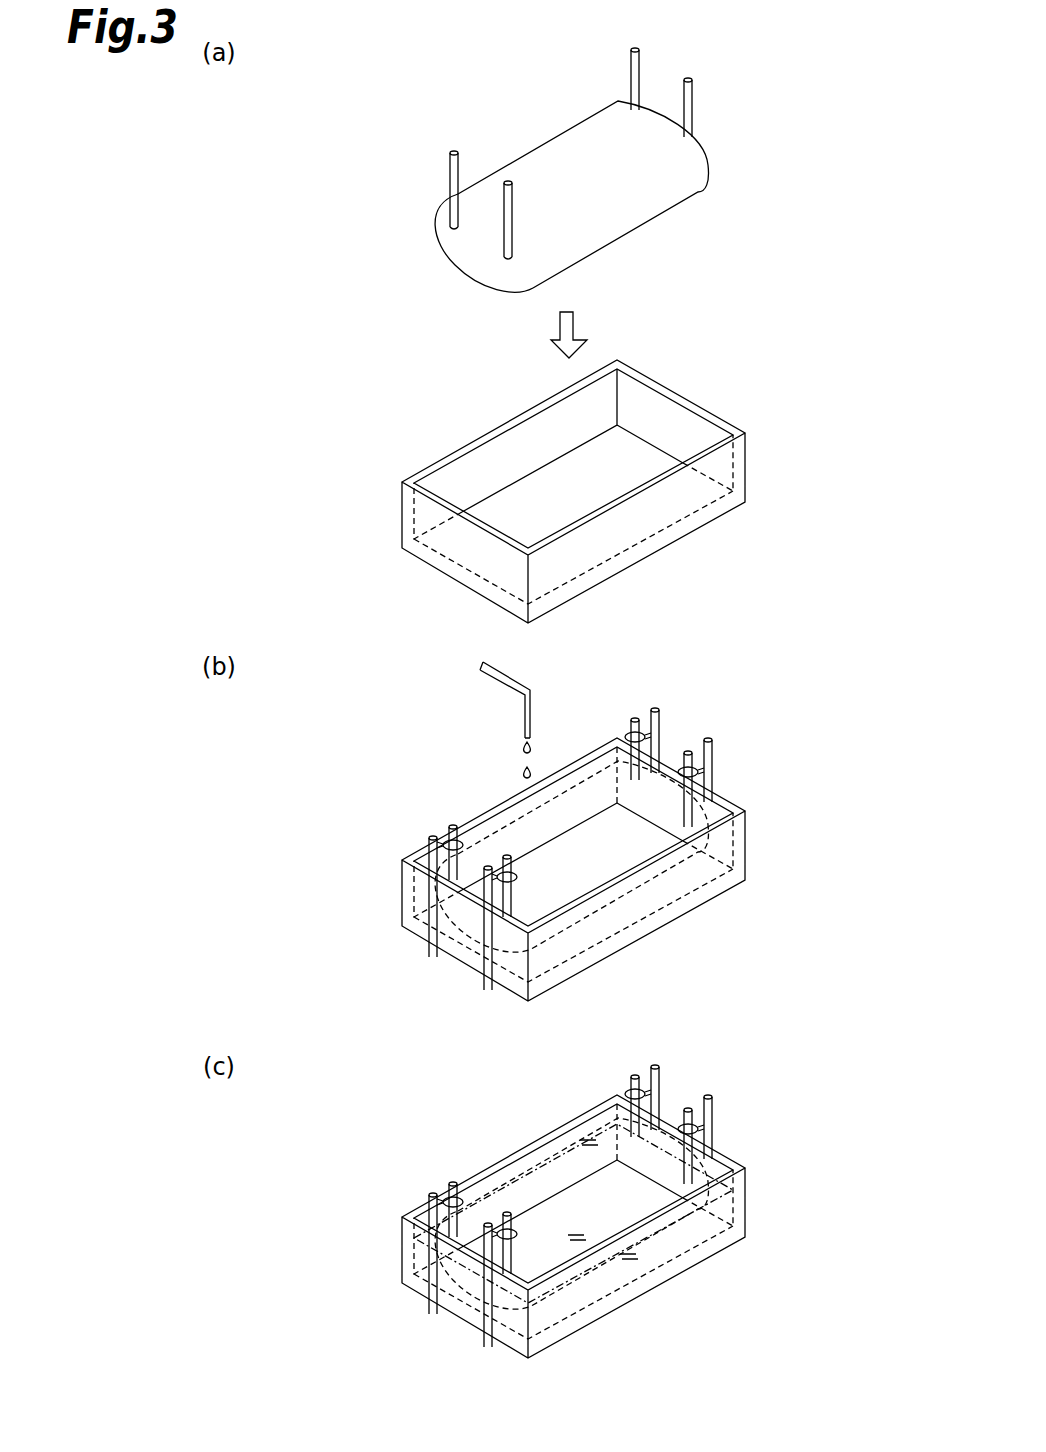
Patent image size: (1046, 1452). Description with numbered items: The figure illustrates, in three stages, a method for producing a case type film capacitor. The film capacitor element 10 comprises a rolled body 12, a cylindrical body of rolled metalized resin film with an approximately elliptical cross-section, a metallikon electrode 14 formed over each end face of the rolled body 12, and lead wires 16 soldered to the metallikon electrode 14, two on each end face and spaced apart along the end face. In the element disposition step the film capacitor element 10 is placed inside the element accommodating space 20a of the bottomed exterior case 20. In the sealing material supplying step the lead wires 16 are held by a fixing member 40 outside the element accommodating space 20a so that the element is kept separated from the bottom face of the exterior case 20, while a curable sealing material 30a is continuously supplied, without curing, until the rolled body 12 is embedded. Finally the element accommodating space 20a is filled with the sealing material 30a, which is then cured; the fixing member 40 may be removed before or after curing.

The film capacitor element 10 is at (678, 65).
The rolled body 12 is at (607, 208).
The metallikon electrode 14 is at (473, 260).
The lead wire 16 is at (630, 67).
The exterior case 20 is at (745, 460).
The element accommodating space 20a is at (684, 412).
The sealing material 30a is at (522, 773).
The fixing member 40 is at (422, 898).